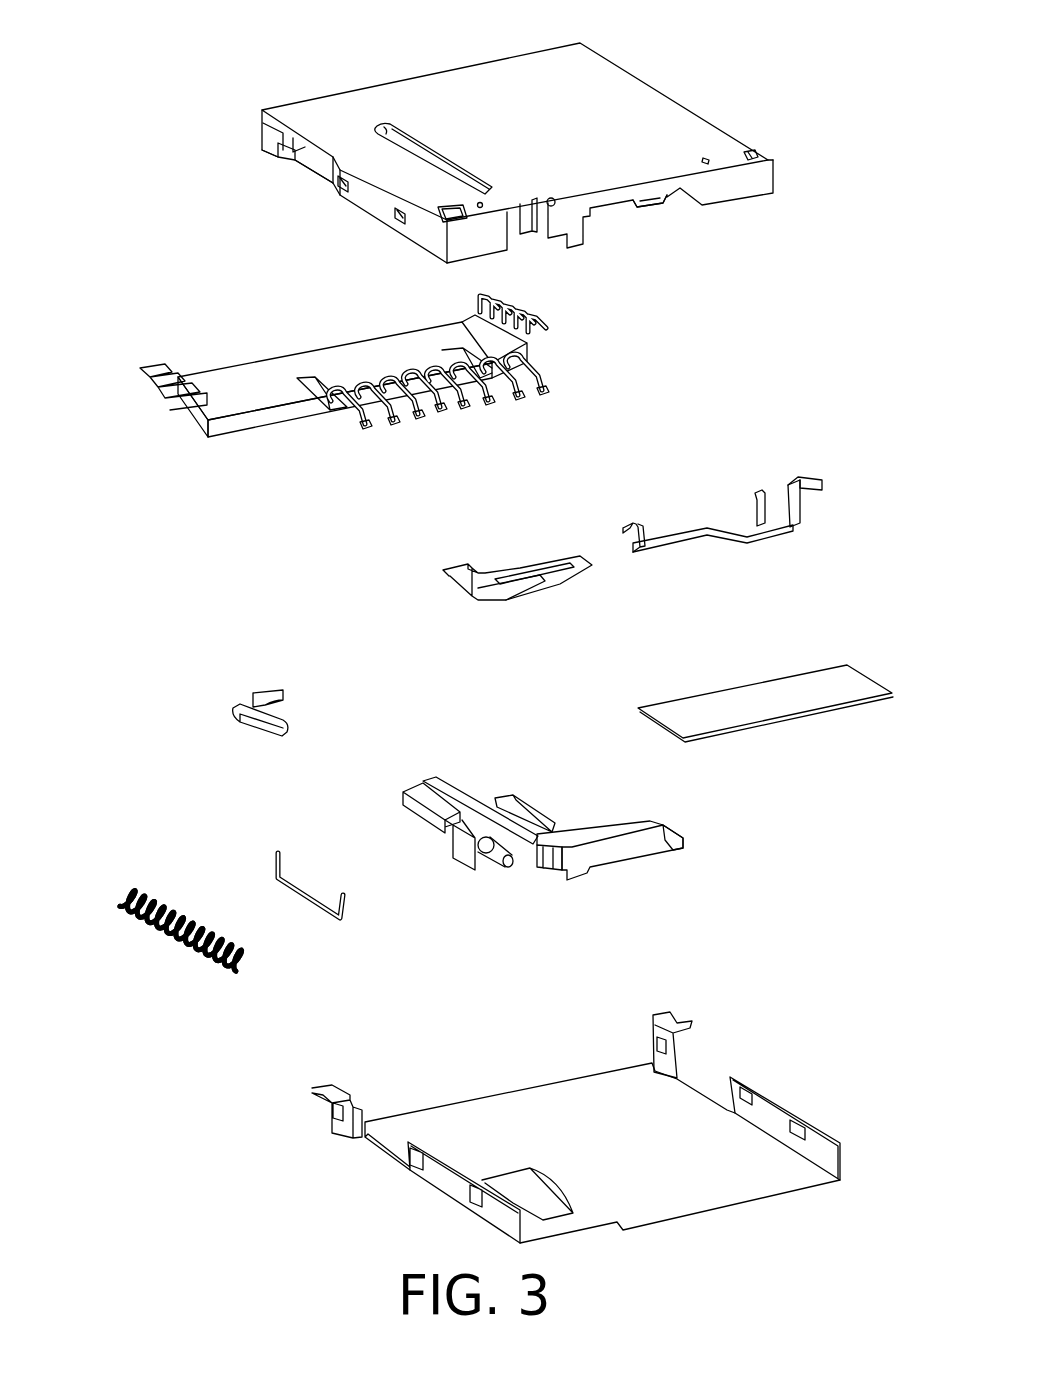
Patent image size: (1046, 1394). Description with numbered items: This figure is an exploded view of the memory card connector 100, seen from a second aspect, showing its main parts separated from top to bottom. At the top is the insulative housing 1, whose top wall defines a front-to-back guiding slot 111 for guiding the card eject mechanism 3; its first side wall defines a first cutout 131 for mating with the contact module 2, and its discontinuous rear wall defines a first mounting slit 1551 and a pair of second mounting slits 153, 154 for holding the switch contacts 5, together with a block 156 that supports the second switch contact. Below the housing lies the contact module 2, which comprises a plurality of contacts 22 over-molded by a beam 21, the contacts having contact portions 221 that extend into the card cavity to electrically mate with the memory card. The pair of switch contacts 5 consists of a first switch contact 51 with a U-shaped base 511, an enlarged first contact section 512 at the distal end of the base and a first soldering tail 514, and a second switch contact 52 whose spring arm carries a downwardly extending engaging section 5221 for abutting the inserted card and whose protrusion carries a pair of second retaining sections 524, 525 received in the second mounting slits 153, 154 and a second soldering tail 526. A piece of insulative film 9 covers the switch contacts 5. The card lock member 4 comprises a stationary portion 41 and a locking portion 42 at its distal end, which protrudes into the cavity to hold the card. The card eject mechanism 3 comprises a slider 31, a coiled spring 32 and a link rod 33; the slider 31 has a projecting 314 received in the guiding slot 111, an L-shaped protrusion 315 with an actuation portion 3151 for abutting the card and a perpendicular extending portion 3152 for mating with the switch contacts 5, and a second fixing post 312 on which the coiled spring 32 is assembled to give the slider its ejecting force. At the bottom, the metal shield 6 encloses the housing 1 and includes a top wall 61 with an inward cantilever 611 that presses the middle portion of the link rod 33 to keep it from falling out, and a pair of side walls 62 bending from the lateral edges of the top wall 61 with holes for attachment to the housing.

The memory card connector 100 is at (140, 1250).
The insulative housing 1 is at (417, 58).
The guiding slot 111 is at (393, 128).
The first mounting slit 1551 is at (552, 197).
The second mounting slit 154 is at (705, 160).
The second mounting slit 153 is at (750, 155).
The first cutout 131 is at (313, 160).
The block 156 is at (653, 205).
The contact module 2 is at (266, 325).
The beam 21 is at (232, 400).
The contacts 22 is at (330, 420).
The contact portions 221 is at (375, 425).
The switch contacts 5 is at (408, 507).
The first switch contact 51 is at (513, 545).
The first soldering tail 514 is at (447, 568).
The first contact section 512 is at (497, 573).
The U-shaped base 511 is at (585, 565).
The engaging section 5221 is at (638, 527).
The second switch contact 52 is at (710, 510).
The second retaining section 524 is at (755, 503).
The second soldering tail 526 is at (805, 482).
The second retaining section 525 is at (798, 510).
The insulative film 9 is at (724, 672).
The card lock member 4 is at (240, 694).
The locking portion 42 is at (280, 703).
The stationary portion 41 is at (270, 732).
The card eject mechanism 3 is at (717, 902).
The slider 31 is at (417, 812).
The projecting 314 is at (525, 807).
The L-shaped protrusion 315 is at (640, 837).
The actuation portion 3151 is at (612, 847).
The extending portion 3152 is at (673, 847).
The second fixing post 312 is at (492, 853).
The link rod 33 is at (300, 892).
The coiled spring 32 is at (163, 930).
The metal shield 6 is at (503, 1080).
The top wall 61 is at (673, 1190).
The side walls 62 is at (763, 1115).
The inward cantilever 611 is at (523, 1182).